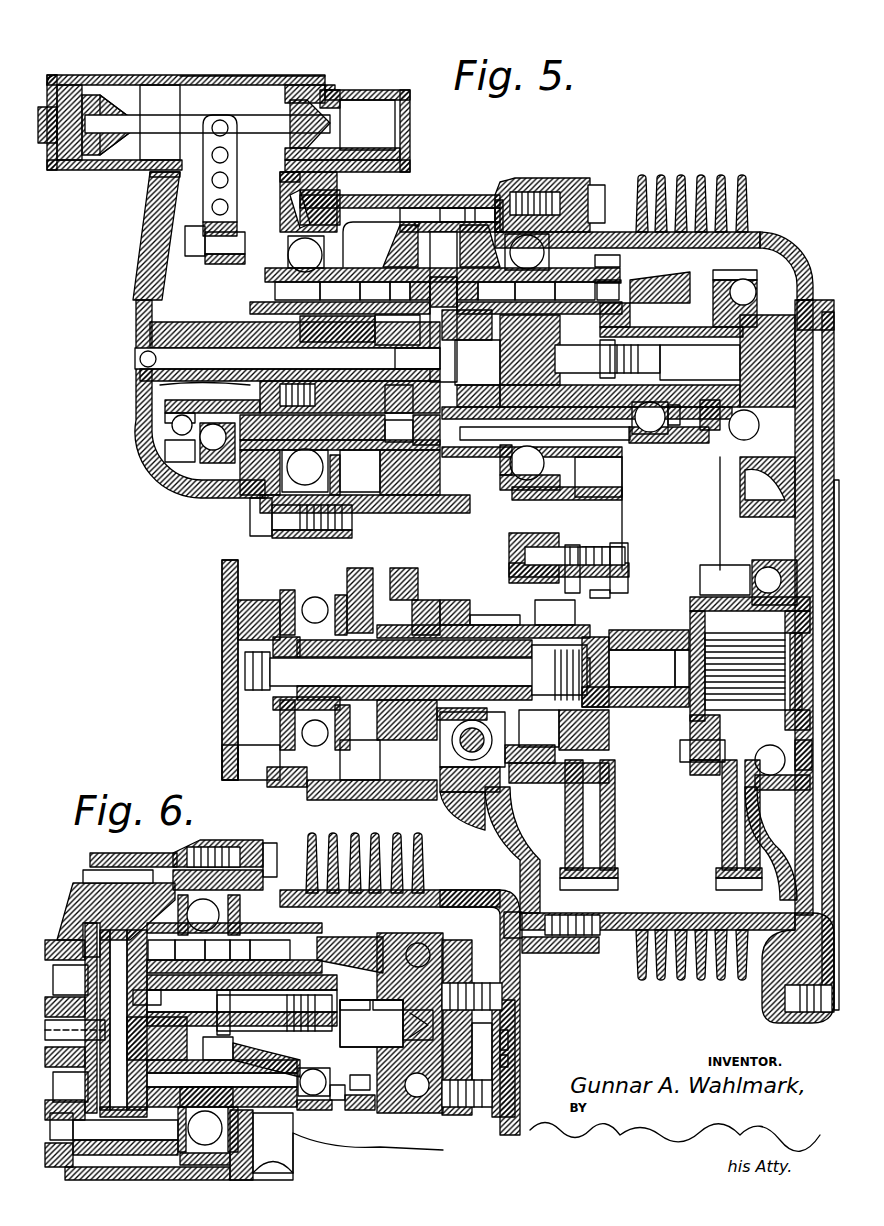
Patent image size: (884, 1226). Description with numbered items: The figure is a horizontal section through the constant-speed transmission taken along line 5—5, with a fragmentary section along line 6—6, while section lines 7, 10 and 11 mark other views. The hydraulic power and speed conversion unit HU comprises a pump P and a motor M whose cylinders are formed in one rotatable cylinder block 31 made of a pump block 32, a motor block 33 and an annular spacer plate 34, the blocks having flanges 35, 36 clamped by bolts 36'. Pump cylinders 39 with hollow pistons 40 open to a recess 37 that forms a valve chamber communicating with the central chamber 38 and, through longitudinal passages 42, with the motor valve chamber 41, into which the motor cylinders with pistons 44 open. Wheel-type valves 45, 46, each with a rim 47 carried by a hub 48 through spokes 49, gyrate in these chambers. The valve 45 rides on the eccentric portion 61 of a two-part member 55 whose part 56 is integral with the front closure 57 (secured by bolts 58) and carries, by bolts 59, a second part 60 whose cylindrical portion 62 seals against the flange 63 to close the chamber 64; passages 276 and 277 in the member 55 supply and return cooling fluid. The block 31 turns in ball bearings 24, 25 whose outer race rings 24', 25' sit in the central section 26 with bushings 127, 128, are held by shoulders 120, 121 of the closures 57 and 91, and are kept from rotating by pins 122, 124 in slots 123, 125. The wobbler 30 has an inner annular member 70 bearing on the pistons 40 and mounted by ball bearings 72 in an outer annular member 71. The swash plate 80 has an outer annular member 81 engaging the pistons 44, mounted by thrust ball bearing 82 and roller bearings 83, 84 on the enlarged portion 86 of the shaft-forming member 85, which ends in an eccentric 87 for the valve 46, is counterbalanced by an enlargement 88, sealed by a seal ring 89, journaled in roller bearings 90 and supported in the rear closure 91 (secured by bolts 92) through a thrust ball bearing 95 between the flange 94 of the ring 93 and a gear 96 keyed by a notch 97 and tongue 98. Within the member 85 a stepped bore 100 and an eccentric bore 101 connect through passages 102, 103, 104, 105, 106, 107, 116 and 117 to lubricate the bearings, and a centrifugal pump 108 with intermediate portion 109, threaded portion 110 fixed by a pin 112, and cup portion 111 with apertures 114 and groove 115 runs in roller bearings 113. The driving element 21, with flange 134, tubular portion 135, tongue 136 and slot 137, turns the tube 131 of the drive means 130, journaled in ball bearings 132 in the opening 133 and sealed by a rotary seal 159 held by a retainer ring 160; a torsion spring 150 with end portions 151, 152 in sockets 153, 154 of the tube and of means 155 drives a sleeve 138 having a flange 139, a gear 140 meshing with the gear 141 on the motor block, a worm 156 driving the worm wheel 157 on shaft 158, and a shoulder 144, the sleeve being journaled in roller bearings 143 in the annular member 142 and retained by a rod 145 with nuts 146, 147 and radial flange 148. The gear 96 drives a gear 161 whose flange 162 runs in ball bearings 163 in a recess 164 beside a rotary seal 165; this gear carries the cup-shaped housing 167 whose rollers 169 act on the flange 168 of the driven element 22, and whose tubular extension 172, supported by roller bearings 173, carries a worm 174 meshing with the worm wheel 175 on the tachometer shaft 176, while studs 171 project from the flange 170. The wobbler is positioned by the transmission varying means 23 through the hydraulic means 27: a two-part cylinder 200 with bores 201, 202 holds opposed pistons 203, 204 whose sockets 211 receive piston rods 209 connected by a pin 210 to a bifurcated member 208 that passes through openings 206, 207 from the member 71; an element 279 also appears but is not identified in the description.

In FIG. 5, the two-part cylinder 200 is at (185, 76).
In FIG. 5, the bore 201 is at (372, 95).
In FIG. 5, the larger bore 202 is at (150, 90).
In FIG. 5, the piston 203 is at (335, 92).
In FIG. 5, the piston 204 is at (118, 82).
In FIG. 5, the enlarged opening 206 is at (290, 160).
In FIG. 5, the opening 207 is at (282, 173).
In FIG. 5, the bifurcated member 208 is at (200, 192).
In FIG. 5, the piston rod 209 is at (160, 124).
In FIG. 5, the pin 210 is at (222, 125).
In FIG. 5, the socket 211 is at (328, 88).
In FIG. 5, the spring seat 279 is at (362, 150).
In FIG. 5, the hydraulic means 27 is at (270, 76).
In FIG. 5, the transmission varying means 23 is at (176, 211).
In FIG. 5, the ball bearings 24 is at (254, 249).
In FIG. 5, the pin 122 is at (280, 212).
In FIG. 5, the slot 123 is at (332, 205).
In FIG. 5, the central section 26 is at (378, 200).
In FIG. 5, the pump block 32 is at (388, 240).
In FIG. 5, the circular recess 37 is at (420, 222).
In FIG. 5, the piston 40 is at (437, 222).
In FIG. 5, the hydraulic power and speed conversion unit HU is at (448, 210).
In FIG. 5, the rotatable cylinder block 31 is at (478, 208).
In FIG. 5, the annular spacer plate 34 is at (460, 208).
In FIG. 5, the motor block 33 is at (497, 210).
In FIG. 5, the circular recess 41 is at (447, 215).
In FIG. 5, the bushing 128 is at (555, 180).
In FIG. 5, the annular ring 25' is at (600, 190).
In FIG. 5, the bolts 92 is at (606, 218).
In FIG. 5, the shoulder 121 is at (600, 232).
In FIG. 5, the gear 96 is at (740, 255).
In FIG. 6, the gear 96 is at (380, 1097).
In FIG. 5, the rear closure section 91 is at (800, 245).
In FIG. 5, the cup portion 111 is at (818, 648).
In FIG. 6, the cup portion 111 is at (505, 1022).
In FIG. 5, the gear 141 is at (613, 268).
In FIG. 5, the motor M is at (662, 260).
In FIG. 5, the intermediate portion 109 is at (700, 310).
In FIG. 6, the intermediate portion 109 is at (408, 1025).
In FIG. 5, the ball bearings 25 is at (527, 252).
In FIG. 5, the annular ring 93 is at (770, 462).
In FIG. 6, the annular ring 93 is at (448, 1122).
In FIG. 5, the flange 94 is at (706, 455).
In FIG. 5, the roller bearings 90 is at (575, 291).
In FIG. 6, the roller bearings 90 is at (217, 950).
In FIG. 5, the roller bearings 84 is at (608, 290).
In FIG. 6, the roller bearings 84 is at (240, 950).
In FIG. 5, the annular flange 63 is at (315, 305).
In FIG. 5, the cylinders 39 is at (434, 293).
In FIG. 5, the spokes 49 is at (397, 330).
In FIG. 5, the valve 45 is at (353, 331).
In FIG. 5, the front closure section 57 is at (128, 320).
In FIG. 5, the inner annular member 70 is at (287, 347).
In FIG. 5, the two-part member 55 is at (290, 368).
In FIG. 5, the bolts 59 is at (350, 384).
In FIG. 5, the section line 6— 6 is at (360, 372).
In FIG. 5, the hub 48 is at (417, 360).
In FIG. 5, the eccentric portion 61 is at (399, 399).
In FIG. 5, the cylindrical portion 62 is at (340, 430).
In FIG. 5, the part 56 is at (175, 397).
In FIG. 5, the wobbler 30 is at (165, 417).
In FIG. 5, the ball bearings 72 is at (182, 427).
In FIG. 5, the outer annular member 71 is at (190, 462).
In FIG. 5, the shoulder 120 is at (340, 467).
In FIG. 5, the second part 60 is at (361, 472).
In FIG. 5, the annular ring 24' is at (355, 473).
In FIG. 5, the bushing 127 is at (350, 498).
In FIG. 5, the longitudinal passages 42 is at (526, 481).
In FIG. 5, the bolts 58 is at (250, 522).
In FIG. 5, the rotary seal 159 is at (267, 578).
In FIG. 5, the bolts 36' is at (366, 585).
In FIG. 5, the flange 35 is at (410, 570).
In FIG. 5, the torsion spring 150 is at (425, 600).
In FIG. 5, the flange 36 is at (500, 556).
In FIG. 5, the section line 10— 10 is at (493, 502).
In FIG. 5, the pin 124 is at (547, 552).
In FIG. 5, the slot 125 is at (549, 566).
In FIG. 5, the flange 139 is at (618, 582).
In FIG. 5, the worm wheel 175 is at (625, 562).
In FIG. 5, the roller bearings 173 is at (612, 594).
In FIG. 5, the rollers 169 is at (712, 574).
In FIG. 5, the ball bearings 163 is at (774, 582).
In FIG. 5, the swash plate 80 is at (671, 513).
In FIG. 5, the outer annular member 81 is at (632, 442).
In FIG. 5, the thrust ball bearing 82 is at (650, 434).
In FIG. 6, the thrust ball bearing 82 is at (308, 1097).
In FIG. 5, the roller bearings 83 is at (672, 434).
In FIG. 6, the roller bearings 83 is at (314, 1120).
In FIG. 5, the thrust ball bearing 95 is at (703, 435).
In FIG. 5, the shaft-forming member 85 is at (534, 353).
In FIG. 5, the threaded portion 110 is at (590, 357).
In FIG. 6, the threaded portion 110 is at (274, 1012).
In FIG. 5, the pin 112 is at (647, 361).
In FIG. 5, the chamber 38 is at (476, 362).
In FIG. 6, the chamber 38 is at (123, 1085).
In FIG. 5, the valve 46 is at (480, 385).
In FIG. 5, the driving element 21 is at (222, 617).
In FIG. 5, the nut 146 is at (245, 670).
In FIG. 5, the slot 137 is at (262, 694).
In FIG. 5, the tongue 136 is at (240, 707).
In FIG. 5, the flange 134 is at (222, 737).
In FIG. 5, the socket 153 is at (430, 672).
In FIG. 5, the end portion 151 is at (414, 659).
In FIG. 5, the tubular portion 135 is at (414, 680).
In FIG. 5, the end portion 152 is at (428, 700).
In FIG. 5, the tube 131 is at (452, 700).
In FIG. 5, the rod 145 is at (482, 679).
In FIG. 5, the nut 147 is at (548, 692).
In FIG. 5, the radial flange 148 is at (635, 668).
In FIG. 5, the shaft 176 is at (658, 652).
In FIG. 5, the driven element 22 is at (786, 667).
In FIG. 5, the rotary seal 165 is at (789, 642).
In FIG. 5, the flange 162 is at (793, 712).
In FIG. 5, the worm 156 is at (482, 625).
In FIG. 5, the sleeve 138 is at (500, 625).
In FIG. 5, the annular shoulder 144 is at (560, 625).
In FIG. 5, the annular member 142 is at (550, 757).
In FIG. 5, the worm 174 is at (612, 730).
In FIG. 5, the tubular extension 172 is at (664, 752).
In FIG. 5, the roller bearings 143 is at (612, 750).
In FIG. 5, the annular flange 168 is at (670, 762).
In FIG. 5, the cup-shaped housing 167 is at (690, 777).
In FIG. 5, the annular flange 170 is at (735, 772).
In FIG. 5, the worm wheel 157 is at (475, 752).
In FIG. 5, the socket 154 is at (462, 762).
In FIG. 5, the shaft 158 is at (478, 797).
In FIG. 5, the drive means 130 is at (435, 802).
In FIG. 5, the means 155 is at (395, 802).
In FIG. 5, the opening 133 is at (302, 792).
In FIG. 5, the ball bearings 132 is at (285, 762).
In FIG. 5, the retainer ring 160 is at (280, 782).
In FIG. 5, the gear 140 is at (590, 852).
In FIG. 5, the recess 164 is at (725, 827).
In FIG. 5, the gear 161 is at (718, 862).
In FIG. 5, the studs 171 is at (785, 1002).
In FIG. 5, the section line 7— 7 is at (217, 64).
In FIG. 5, the pump P is at (376, 247).
In FIG. 6, the chamber 64 is at (70, 940).
In FIG. 6, the rim 47 is at (98, 900).
In FIG. 6, the radial passage 105 is at (300, 960).
In FIG. 6, the seal ring 89 is at (234, 942).
In FIG. 6, the passage 104 is at (234, 956).
In FIG. 6, the annular passage 116 is at (335, 992).
In FIG. 6, the section line 11— 11 is at (116, 1018).
In FIG. 6, the passage 277 is at (66, 969).
In FIG. 6, the section line 5— 5 is at (55, 1020).
In FIG. 6, the groove 103 is at (147, 999).
In FIG. 6, the eccentric bore 101 is at (242, 996).
In FIG. 6, the passage 117 is at (353, 1013).
In FIG. 6, the roller bearings 113 is at (388, 1013).
In FIG. 6, the stepped bore 100 is at (371, 1023).
In FIG. 6, the L-shaped passage 102 is at (164, 1038).
In FIG. 6, the eccentric 87 is at (241, 1035).
In FIG. 6, the longitudinal passage 106 is at (250, 1057).
In FIG. 6, the passage 107 is at (318, 1082).
In FIG. 6, the passage 276 is at (66, 1083).
In FIG. 6, the enlargement 88 is at (135, 1127).
In FIG. 6, the piston 44 is at (336, 1145).
In FIG. 6, the enlarged portion 86 is at (338, 1100).
In FIG. 6, the notch 97 is at (360, 1092).
In FIG. 6, the tongue 98 is at (357, 1115).
In FIG. 6, the centrifugal pump 108 is at (505, 1042).
In FIG. 6, the apertures 114 is at (505, 1062).
In FIG. 6, the annular groove 115 is at (505, 1080).